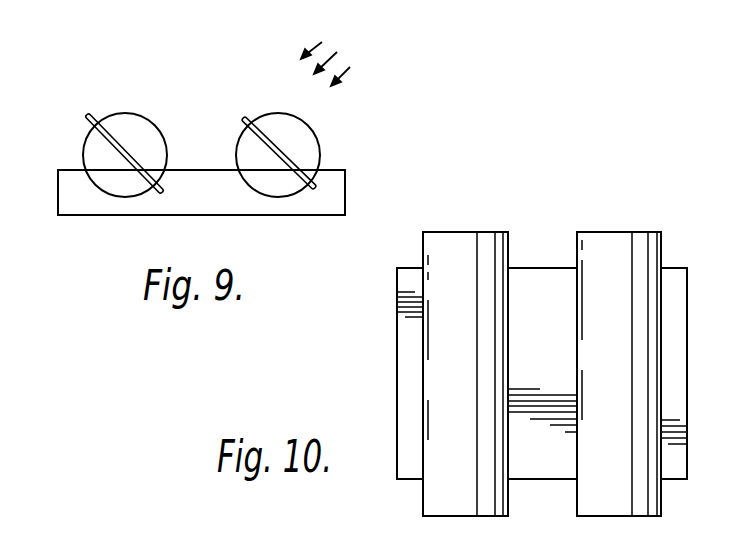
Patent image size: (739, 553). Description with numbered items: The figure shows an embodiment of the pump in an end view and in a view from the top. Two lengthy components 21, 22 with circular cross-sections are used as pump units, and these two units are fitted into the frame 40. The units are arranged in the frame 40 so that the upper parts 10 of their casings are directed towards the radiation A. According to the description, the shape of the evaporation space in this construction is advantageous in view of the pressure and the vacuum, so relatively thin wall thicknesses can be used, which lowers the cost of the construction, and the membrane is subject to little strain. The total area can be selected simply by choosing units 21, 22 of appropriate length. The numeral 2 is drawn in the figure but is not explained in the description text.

In FIG. 9, the ball 2 is at (161, 147).
In FIG. 9, the upper part of the casing 10 is at (213, 128).
In FIG. 9, the lengthy component 21 is at (90, 113).
In FIG. 9, the lengthy component 22 is at (248, 117).
In FIG. 9, the frame 40 is at (346, 189).
In FIG. 10, the frame 40 is at (410, 338).
In FIG. 9, the radiation A is at (326, 59).